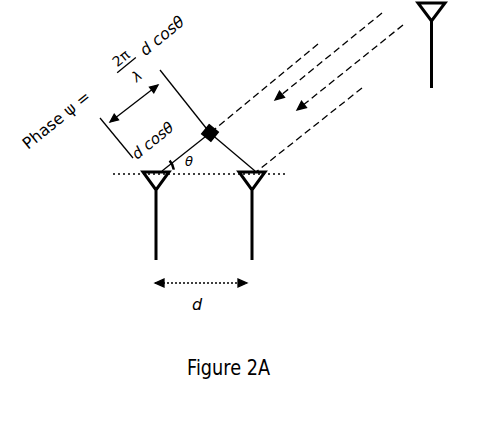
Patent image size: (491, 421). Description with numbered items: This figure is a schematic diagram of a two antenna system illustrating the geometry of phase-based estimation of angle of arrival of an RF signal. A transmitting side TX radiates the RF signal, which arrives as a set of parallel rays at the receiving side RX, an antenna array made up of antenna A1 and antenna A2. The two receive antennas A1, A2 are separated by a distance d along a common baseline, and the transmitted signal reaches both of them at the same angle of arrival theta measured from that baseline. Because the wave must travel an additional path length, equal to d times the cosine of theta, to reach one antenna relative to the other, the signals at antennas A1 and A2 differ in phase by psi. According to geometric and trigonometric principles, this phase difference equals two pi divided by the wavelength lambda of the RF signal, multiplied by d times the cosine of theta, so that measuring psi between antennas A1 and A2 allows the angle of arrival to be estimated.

The transmit antenna TX is at (432, 64).
The receive antennas RX is at (183, 227).
The antenna A1 is at (252, 227).
The antenna A2 is at (156, 227).